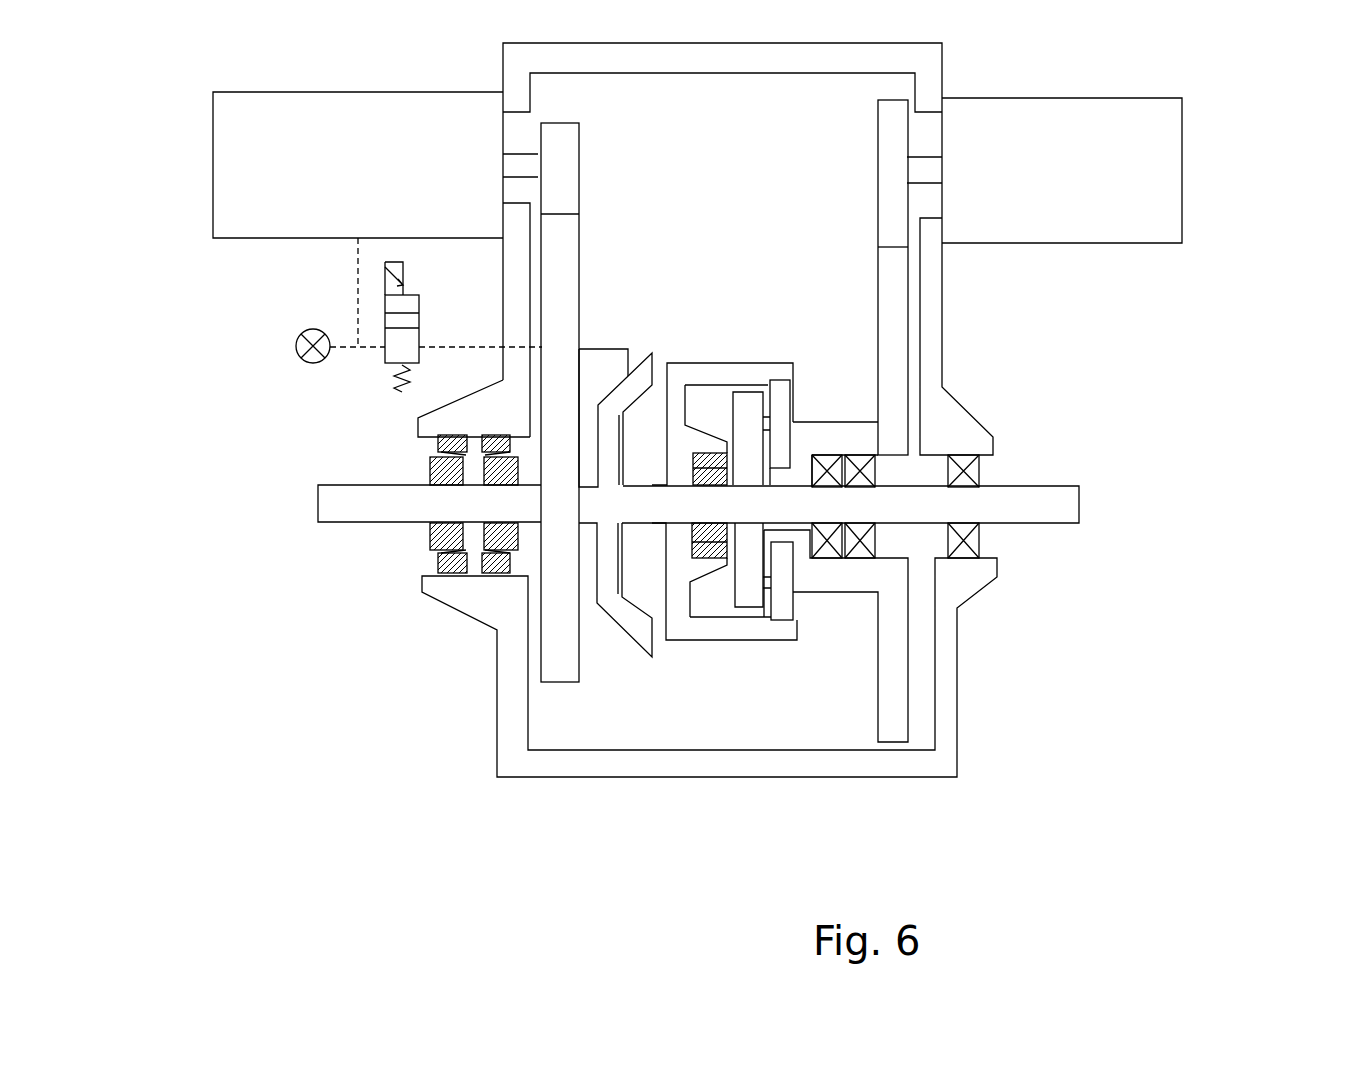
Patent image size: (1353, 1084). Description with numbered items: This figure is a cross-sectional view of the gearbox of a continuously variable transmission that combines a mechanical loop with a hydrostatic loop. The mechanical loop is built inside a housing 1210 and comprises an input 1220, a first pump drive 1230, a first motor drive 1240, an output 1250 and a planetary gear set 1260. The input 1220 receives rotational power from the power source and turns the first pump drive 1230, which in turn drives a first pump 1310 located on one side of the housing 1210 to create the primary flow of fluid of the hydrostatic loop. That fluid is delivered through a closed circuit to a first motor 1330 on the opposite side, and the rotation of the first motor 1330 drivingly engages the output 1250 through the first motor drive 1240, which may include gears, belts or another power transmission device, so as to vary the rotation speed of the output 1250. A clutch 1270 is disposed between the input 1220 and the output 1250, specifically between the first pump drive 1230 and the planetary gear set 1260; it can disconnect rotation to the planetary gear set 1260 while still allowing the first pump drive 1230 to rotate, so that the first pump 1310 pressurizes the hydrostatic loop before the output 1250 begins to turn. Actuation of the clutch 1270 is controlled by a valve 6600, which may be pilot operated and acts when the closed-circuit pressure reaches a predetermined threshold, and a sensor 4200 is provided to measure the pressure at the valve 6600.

The housing 1210 is at (610, 775).
The input 1220 is at (318, 513).
The first pump drive 1230 is at (548, 627).
The first motor drive 1240 is at (898, 365).
The output 1250 is at (1068, 520).
The planetary gear set 1260 is at (743, 647).
The clutch 1270 is at (633, 642).
The first pump 1310 is at (217, 165).
The first motor 1330 is at (1175, 177).
The sensor 4200 is at (292, 348).
The valve 6600 is at (383, 355).